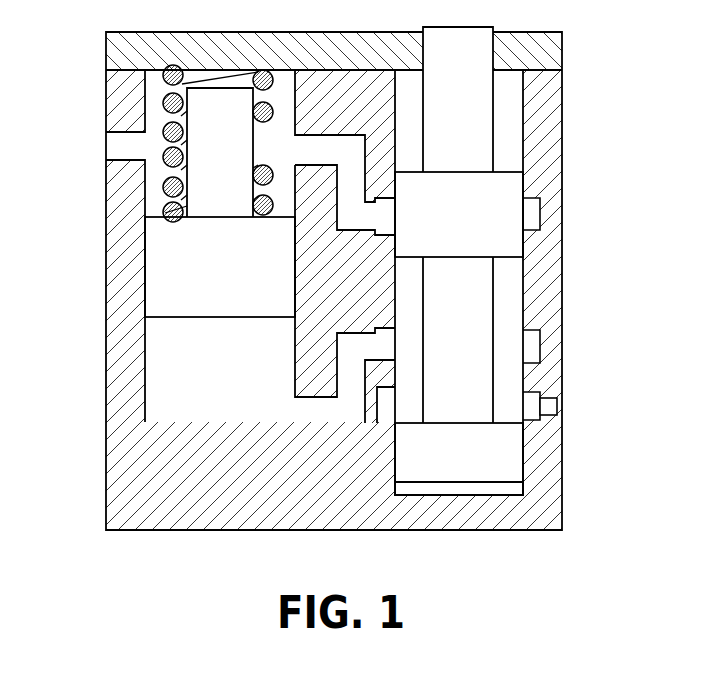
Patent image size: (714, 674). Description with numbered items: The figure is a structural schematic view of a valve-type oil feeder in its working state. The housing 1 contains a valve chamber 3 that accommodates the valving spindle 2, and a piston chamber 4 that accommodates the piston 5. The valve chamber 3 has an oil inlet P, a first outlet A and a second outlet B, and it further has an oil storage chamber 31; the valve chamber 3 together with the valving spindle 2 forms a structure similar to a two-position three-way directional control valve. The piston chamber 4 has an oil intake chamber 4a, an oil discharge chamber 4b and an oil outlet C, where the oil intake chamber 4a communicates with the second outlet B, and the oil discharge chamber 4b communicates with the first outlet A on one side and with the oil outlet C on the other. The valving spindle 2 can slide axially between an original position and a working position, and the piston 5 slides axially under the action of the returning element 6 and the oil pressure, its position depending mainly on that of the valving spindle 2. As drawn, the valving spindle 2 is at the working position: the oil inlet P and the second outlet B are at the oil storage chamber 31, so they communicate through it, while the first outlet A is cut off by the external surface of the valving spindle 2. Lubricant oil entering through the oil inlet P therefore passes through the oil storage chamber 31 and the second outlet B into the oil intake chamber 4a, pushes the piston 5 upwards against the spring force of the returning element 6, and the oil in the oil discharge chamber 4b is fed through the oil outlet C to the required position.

The housing 1 is at (540, 137).
The valving spindle 2 is at (477, 192).
The valve chamber 3 is at (468, 490).
The oil storage chamber 31 is at (505, 270).
The piston chamber 4 is at (142, 287).
The oil intake chamber 4a is at (183, 402).
The oil discharge chamber 4b is at (158, 153).
The piston 5 is at (160, 252).
The returning element 6 is at (165, 100).
The first outlet A is at (387, 215).
The second outlet B is at (388, 347).
The oil outlet C is at (120, 138).
The oil inlet P is at (550, 412).